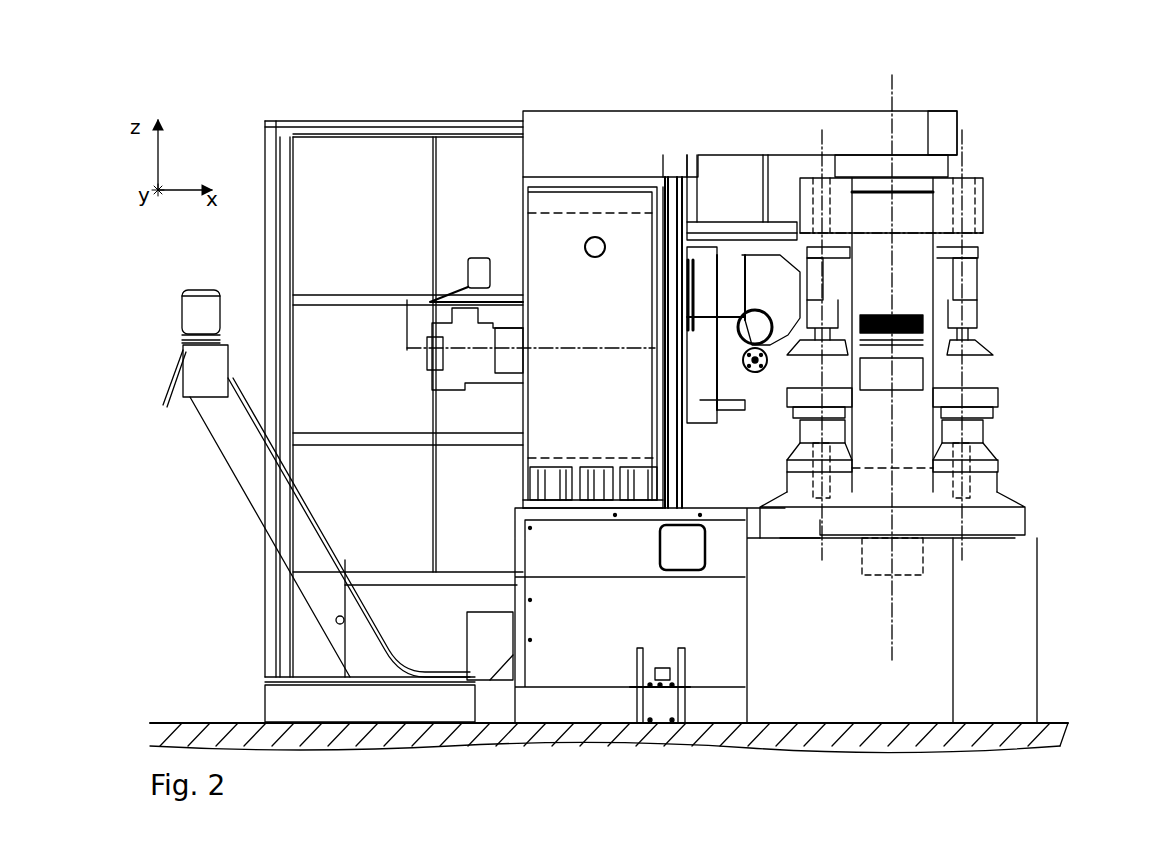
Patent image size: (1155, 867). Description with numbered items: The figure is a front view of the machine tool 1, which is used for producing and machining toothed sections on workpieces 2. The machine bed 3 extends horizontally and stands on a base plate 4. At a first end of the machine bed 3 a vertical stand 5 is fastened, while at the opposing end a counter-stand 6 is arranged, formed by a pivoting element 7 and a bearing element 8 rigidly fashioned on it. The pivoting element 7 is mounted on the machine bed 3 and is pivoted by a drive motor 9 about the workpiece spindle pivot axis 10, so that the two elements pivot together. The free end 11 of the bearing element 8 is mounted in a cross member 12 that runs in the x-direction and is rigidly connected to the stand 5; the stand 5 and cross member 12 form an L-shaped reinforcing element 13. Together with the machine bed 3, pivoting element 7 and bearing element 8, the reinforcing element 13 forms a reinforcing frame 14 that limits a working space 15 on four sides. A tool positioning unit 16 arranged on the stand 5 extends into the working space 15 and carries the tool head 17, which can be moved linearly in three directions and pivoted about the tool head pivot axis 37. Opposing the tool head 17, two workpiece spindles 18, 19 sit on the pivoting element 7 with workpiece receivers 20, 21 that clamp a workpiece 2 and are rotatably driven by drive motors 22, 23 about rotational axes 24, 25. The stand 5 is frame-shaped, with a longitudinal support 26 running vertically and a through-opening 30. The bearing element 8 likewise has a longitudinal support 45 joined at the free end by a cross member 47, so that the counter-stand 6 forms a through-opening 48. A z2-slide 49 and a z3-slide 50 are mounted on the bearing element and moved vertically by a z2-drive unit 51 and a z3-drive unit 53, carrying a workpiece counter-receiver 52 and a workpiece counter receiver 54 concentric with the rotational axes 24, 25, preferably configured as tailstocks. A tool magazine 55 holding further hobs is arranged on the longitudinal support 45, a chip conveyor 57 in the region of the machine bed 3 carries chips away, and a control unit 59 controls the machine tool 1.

The machine tool 1 is at (698, 100).
The workpiece 2 is at (845, 396).
The machine bed 3 is at (985, 715).
The base plate 4 is at (305, 746).
The stand 5 is at (523, 228).
The counter-stand 6 is at (942, 193).
The pivoting element 7 is at (1017, 525).
The bearing element 8 is at (918, 214).
The drive motor 9 is at (866, 578).
The workpiece spindle pivot axis 10 is at (892, 653).
The free end 11 is at (923, 187).
The cross member 12 is at (764, 122).
The reinforcing element 13 is at (666, 114).
The reinforcing frame 14 is at (712, 400).
The working space 15 is at (806, 384).
The tool positioning unit 16 is at (485, 316).
The tool head 17 is at (752, 288).
The workpiece spindle 18 is at (812, 480).
The workpiece spindle 19 is at (988, 441).
The workpiece receiver 20 is at (790, 432).
The workpiece receiver 21 is at (993, 412).
The drive motor 22 is at (800, 500).
The drive motor 23 is at (970, 453).
The rotational axis 24 is at (822, 540).
The rotational axis 25 is at (965, 362).
The longitudinal support 26 is at (580, 440).
The through-opening 30 is at (604, 215).
The tool head pivot axis 37 is at (407, 350).
The longitudinal support 45 is at (907, 196).
The cross member 47 is at (843, 190).
The through-opening 48 is at (913, 467).
The z2-slide 49 is at (845, 255).
The z3-slide 50 is at (952, 275).
The z2-drive unit 51 is at (823, 190).
The workpiece counter-receiver 52 is at (793, 233).
The z3-drive unit 53 is at (970, 225).
The workpiece counter receiver 54 is at (932, 331).
The tool magazine 55 is at (965, 322).
The chip conveyor 57 is at (360, 650).
The control unit 59 is at (379, 148).